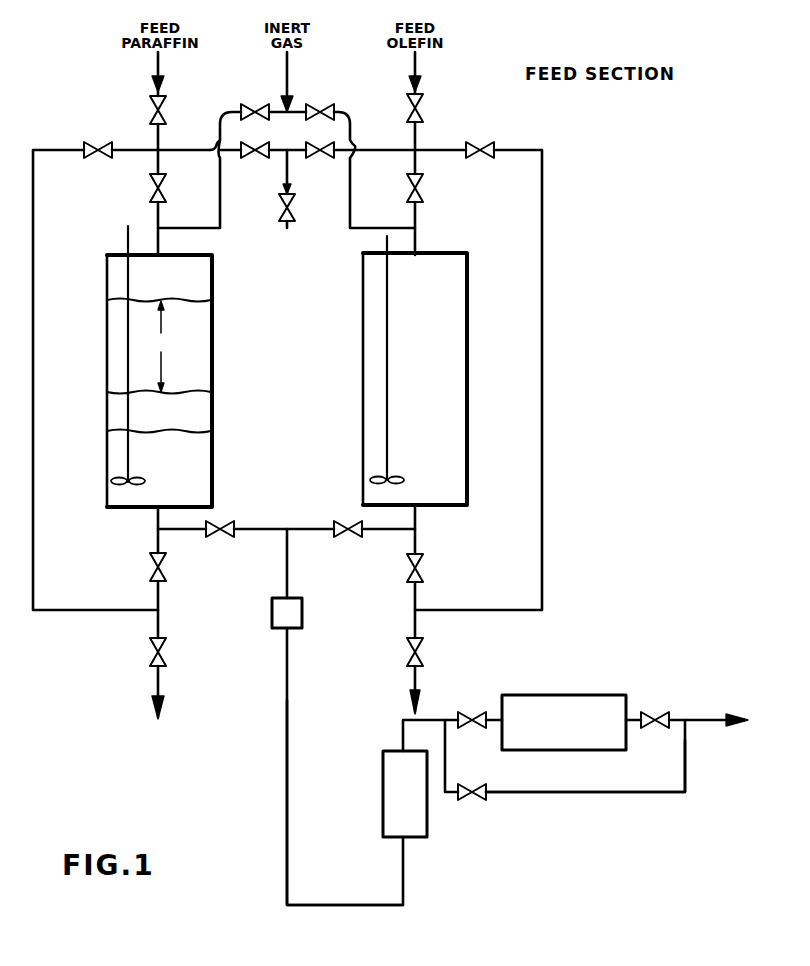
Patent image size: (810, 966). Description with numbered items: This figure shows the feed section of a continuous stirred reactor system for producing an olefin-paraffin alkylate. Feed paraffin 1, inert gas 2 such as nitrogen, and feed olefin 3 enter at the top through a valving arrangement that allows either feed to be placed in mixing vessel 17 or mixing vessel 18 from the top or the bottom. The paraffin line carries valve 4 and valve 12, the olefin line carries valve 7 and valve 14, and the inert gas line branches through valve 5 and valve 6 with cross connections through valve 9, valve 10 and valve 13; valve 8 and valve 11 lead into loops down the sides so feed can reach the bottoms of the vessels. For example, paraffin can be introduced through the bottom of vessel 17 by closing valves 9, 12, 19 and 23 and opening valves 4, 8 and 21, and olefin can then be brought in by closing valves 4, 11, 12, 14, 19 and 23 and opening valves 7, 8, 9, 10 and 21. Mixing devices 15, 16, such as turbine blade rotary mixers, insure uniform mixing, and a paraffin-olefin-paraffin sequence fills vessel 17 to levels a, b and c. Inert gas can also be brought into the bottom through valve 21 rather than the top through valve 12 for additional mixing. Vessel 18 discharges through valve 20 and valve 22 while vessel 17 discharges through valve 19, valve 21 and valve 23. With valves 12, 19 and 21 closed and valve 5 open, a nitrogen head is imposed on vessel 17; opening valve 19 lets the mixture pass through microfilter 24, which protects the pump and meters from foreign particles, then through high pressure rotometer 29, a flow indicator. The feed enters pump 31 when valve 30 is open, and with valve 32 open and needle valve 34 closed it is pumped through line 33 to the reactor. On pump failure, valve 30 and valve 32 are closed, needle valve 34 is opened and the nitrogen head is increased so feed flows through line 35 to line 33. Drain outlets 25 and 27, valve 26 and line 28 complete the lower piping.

The feed paraffin 1 is at (155, 75).
The inert gas 2 is at (289, 92).
The feed olefin 3 is at (417, 72).
The valve 4 is at (161, 114).
The valve 5 is at (258, 108).
The valve 6 is at (317, 107).
The valve 7 is at (418, 112).
The valve 8 is at (99, 154).
The valve 9 is at (258, 154).
The valve 10 is at (316, 154).
The valve 11 is at (480, 158).
The valve 12 is at (161, 192).
The valve 13 is at (290, 210).
The valve 14 is at (418, 192).
The mixing device 15 is at (126, 240).
The mixing device 16 is at (386, 298).
The mixing vessel 17 is at (214, 326).
The mixing vessel 18 is at (470, 370).
The valve 19 is at (220, 525).
The valve 20 is at (348, 525).
The valve 21 is at (161, 571).
The valve 22 is at (418, 572).
The valve 23 is at (161, 656).
The microfilter 24 is at (304, 609).
The drain outlet 25 is at (160, 686).
The drain valve 26 is at (418, 656).
The drain outlet 27 is at (408, 678).
The feed line 28 is at (285, 776).
The high pressure rotometer 29 is at (382, 793).
The valve 30 is at (472, 716).
The pump 31 is at (570, 691).
The valve 32 is at (652, 716).
The line 33 is at (700, 722).
The needle valve 34 is at (469, 797).
The line 35 is at (603, 794).